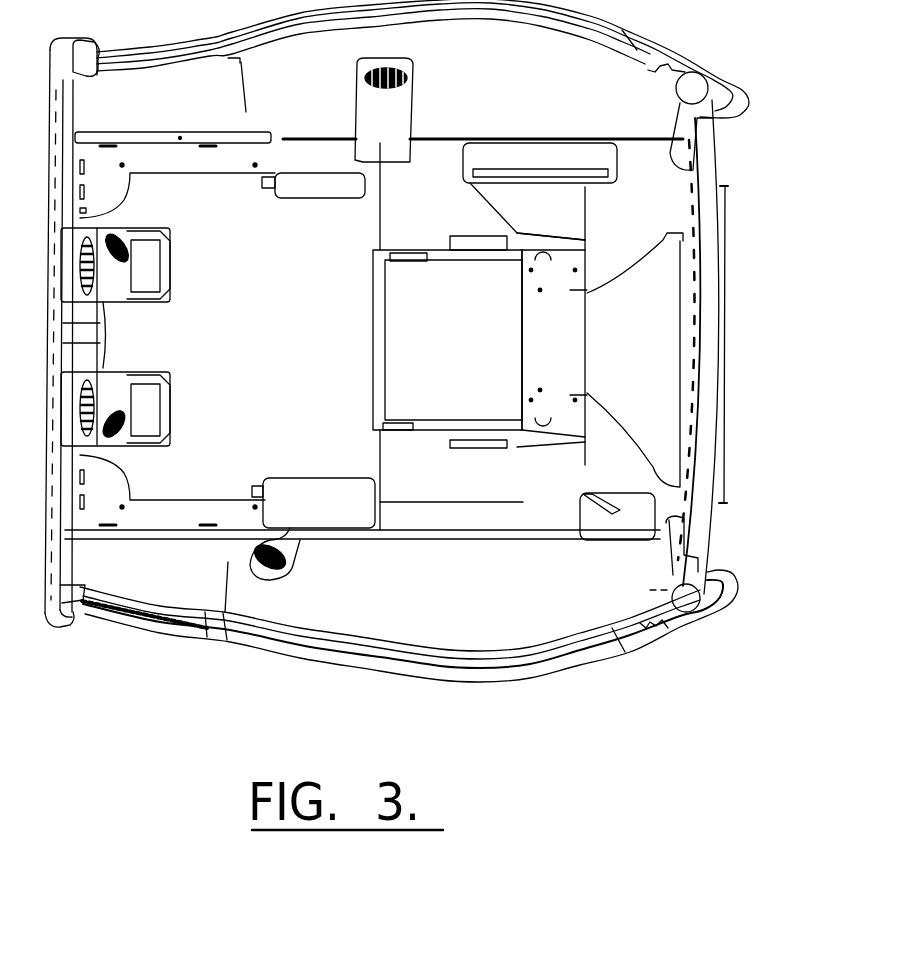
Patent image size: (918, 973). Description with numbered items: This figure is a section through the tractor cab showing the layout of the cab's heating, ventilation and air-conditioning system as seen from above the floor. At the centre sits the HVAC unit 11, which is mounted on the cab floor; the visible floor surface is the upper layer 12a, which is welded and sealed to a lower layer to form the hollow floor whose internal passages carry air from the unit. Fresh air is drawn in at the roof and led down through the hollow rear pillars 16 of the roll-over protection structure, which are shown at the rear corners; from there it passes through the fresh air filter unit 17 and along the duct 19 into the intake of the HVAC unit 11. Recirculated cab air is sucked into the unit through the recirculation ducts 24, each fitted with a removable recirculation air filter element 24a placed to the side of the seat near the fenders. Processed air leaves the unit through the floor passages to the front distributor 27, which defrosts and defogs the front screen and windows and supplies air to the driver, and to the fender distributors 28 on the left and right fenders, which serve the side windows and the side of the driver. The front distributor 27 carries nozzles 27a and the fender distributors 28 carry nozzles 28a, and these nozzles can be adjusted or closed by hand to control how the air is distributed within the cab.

The HVAC unit 11 is at (492, 332).
The upper layer 12a is at (332, 332).
The hollow rear pillar 16 is at (710, 97).
The fresh air filter unit 17 is at (693, 338).
The duct 19 is at (663, 355).
The recirculation duct 24 is at (567, 165).
The recirculation air filter element 24a is at (583, 178).
The front distributor 27 is at (152, 258).
The nozzle 27a is at (112, 245).
The fender distributor 28 is at (362, 150).
The nozzle 28a is at (412, 74).